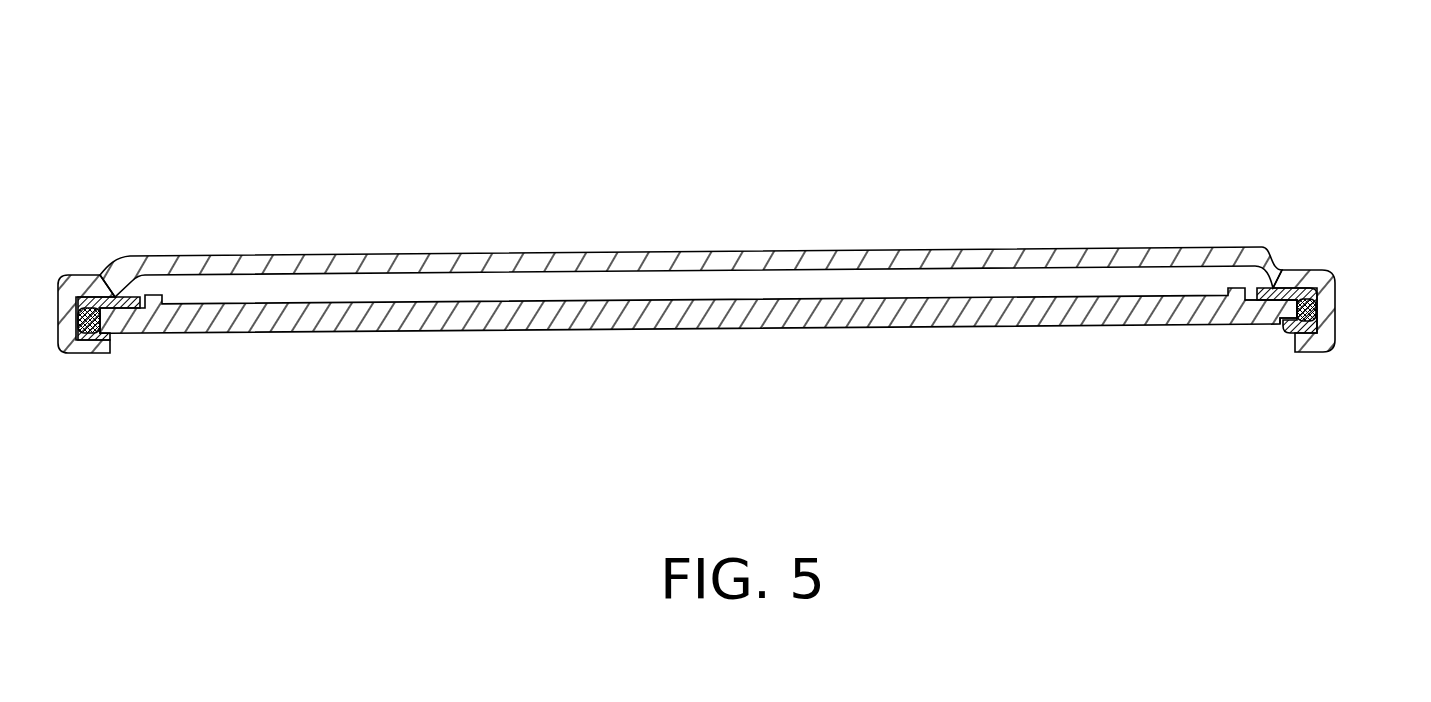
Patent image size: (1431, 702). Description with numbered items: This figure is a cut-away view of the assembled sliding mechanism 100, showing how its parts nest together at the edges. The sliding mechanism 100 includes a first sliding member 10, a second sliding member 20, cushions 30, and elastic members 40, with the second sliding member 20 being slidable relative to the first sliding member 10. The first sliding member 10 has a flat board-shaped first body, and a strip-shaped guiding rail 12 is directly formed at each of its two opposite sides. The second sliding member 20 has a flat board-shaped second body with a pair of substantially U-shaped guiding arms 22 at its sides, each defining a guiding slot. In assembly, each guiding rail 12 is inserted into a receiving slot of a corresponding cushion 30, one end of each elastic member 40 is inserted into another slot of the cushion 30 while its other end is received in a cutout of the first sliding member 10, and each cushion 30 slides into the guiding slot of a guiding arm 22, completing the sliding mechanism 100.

The sliding mechanism 100 is at (781, 49).
The first sliding member 10 is at (365, 314).
The guiding rail 12 is at (1270, 326).
The second sliding member 20 is at (360, 264).
The guiding arm 22 is at (1331, 288).
The cushion 30 is at (1313, 267).
The elastic member 40 is at (1312, 311).